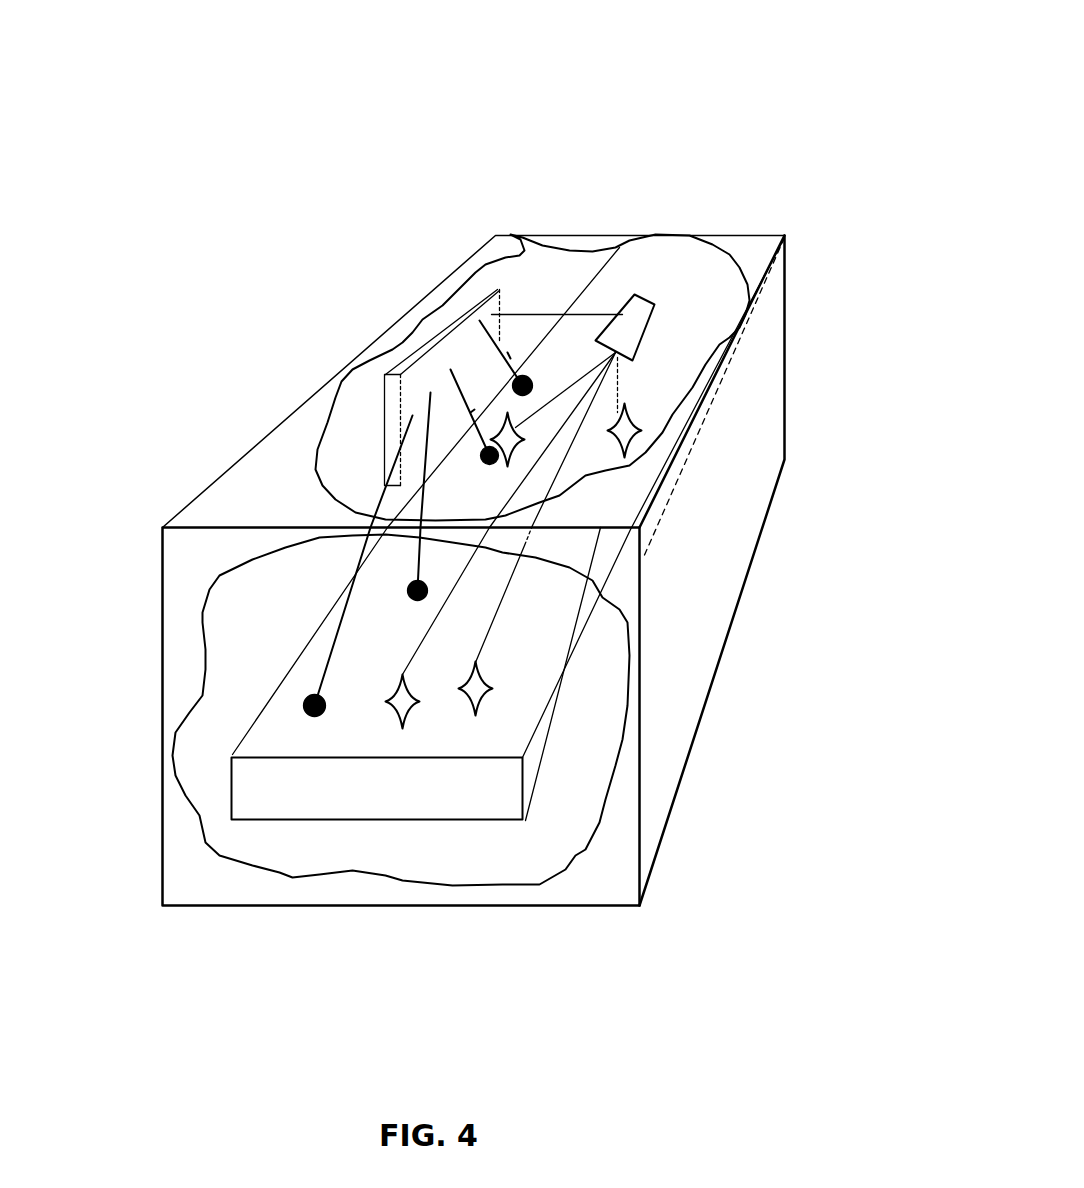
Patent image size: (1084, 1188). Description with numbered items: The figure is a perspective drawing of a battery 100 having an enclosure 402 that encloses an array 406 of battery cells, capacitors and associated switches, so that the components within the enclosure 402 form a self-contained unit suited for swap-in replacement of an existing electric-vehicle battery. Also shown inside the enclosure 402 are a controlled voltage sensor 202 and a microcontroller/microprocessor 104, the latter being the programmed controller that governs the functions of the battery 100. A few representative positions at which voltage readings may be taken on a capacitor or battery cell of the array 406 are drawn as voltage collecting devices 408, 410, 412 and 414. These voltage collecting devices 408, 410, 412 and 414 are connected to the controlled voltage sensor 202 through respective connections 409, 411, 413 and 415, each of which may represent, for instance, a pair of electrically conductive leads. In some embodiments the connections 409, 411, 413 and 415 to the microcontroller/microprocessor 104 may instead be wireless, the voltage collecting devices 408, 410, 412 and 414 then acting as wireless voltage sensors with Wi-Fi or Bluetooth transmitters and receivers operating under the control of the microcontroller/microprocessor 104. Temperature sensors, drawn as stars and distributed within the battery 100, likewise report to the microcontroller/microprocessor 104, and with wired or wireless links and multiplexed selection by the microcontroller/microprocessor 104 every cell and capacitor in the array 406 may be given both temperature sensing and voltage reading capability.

The battery 100 is at (207, 285).
The microcontroller/microprocessor 104 is at (635, 312).
The controlled voltage sensor 202 is at (430, 363).
The enclosure 402 is at (561, 570).
The array 406 is at (514, 810).
The voltage collecting device 408 is at (305, 693).
The connection 409 is at (332, 657).
The voltage collecting device 410 is at (407, 606).
The connection 411 is at (433, 553).
The voltage collecting device 412 is at (478, 461).
The connection 413 is at (472, 407).
The voltage collecting device 414 is at (533, 367).
The connection 415 is at (505, 350).